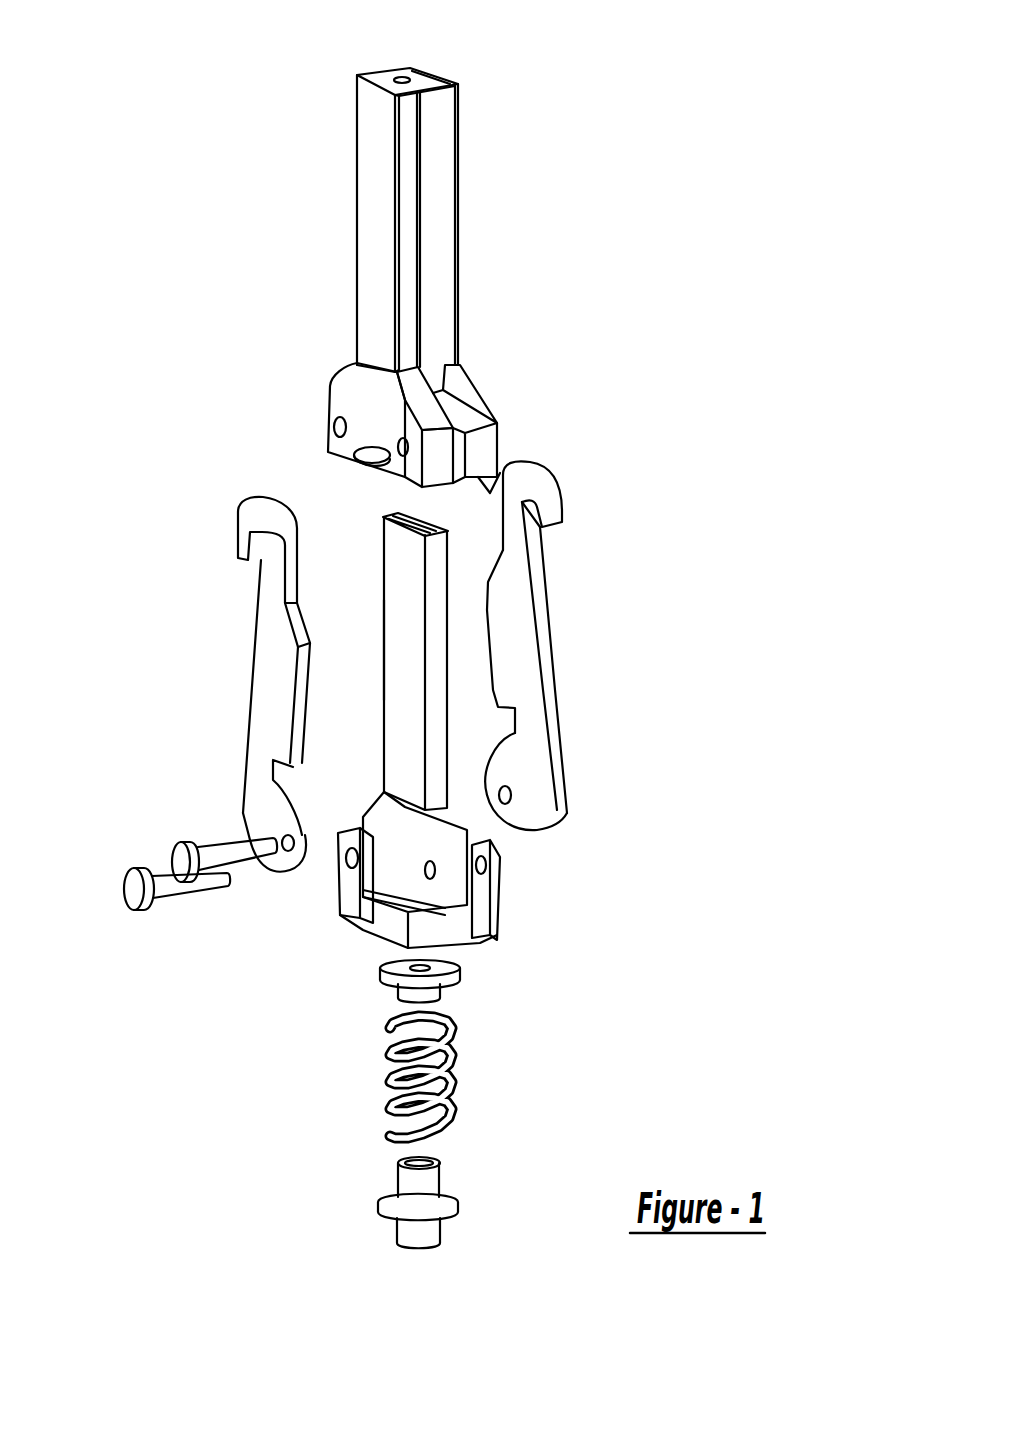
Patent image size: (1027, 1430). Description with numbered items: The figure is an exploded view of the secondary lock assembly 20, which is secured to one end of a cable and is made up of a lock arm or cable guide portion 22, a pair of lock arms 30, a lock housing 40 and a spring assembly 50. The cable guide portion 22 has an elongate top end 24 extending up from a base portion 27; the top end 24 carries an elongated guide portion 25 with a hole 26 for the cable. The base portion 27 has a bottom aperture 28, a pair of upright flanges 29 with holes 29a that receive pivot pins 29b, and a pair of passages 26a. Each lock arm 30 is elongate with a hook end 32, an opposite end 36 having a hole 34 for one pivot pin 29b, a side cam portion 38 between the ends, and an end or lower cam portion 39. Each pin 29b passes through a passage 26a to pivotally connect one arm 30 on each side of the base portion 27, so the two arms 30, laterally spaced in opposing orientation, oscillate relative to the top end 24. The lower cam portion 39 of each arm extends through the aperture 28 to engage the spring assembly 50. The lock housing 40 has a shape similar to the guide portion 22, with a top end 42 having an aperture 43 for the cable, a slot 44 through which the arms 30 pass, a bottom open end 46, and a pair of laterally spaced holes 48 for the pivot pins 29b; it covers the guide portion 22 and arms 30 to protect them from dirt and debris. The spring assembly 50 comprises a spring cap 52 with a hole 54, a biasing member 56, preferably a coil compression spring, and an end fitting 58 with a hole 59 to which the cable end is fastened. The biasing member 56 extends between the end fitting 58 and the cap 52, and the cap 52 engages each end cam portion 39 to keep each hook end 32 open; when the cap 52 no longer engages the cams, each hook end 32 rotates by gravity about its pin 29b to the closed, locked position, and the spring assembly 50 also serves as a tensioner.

The secondary lock assembly 20 is at (265, 421).
The lock arm or cable guide portion 22 is at (457, 742).
The elongate top end 24 is at (402, 516).
The elongated guide portion 25 is at (383, 557).
The hole 26 is at (385, 721).
The passages 26a is at (432, 864).
The base portion 27 is at (466, 942).
The bottom aperture 28 is at (395, 883).
The upright flanges 29 is at (500, 880).
The holes 29a is at (352, 858).
The pivot pins 29b is at (162, 873).
The lock arms 30 is at (411, 725).
The hook end 32 is at (240, 530).
The hole 34 is at (452, 767).
The opposite end 36 is at (247, 798).
The side cam portion 38 is at (492, 568).
The end or lower cam portion 39 is at (537, 832).
The lock housing 40 is at (475, 186).
The top end 42 is at (438, 85).
The aperture 43 is at (403, 77).
The slot 44 is at (432, 360).
The bottom open end 46 is at (449, 386).
The holes 48 is at (336, 424).
The spring assembly 50 is at (298, 1058).
The spring cap 52 is at (419, 1003).
The hole 54 is at (455, 940).
The biasing member 56 is at (447, 1055).
The end fitting 58 is at (460, 1191).
The hole 59 is at (420, 1160).